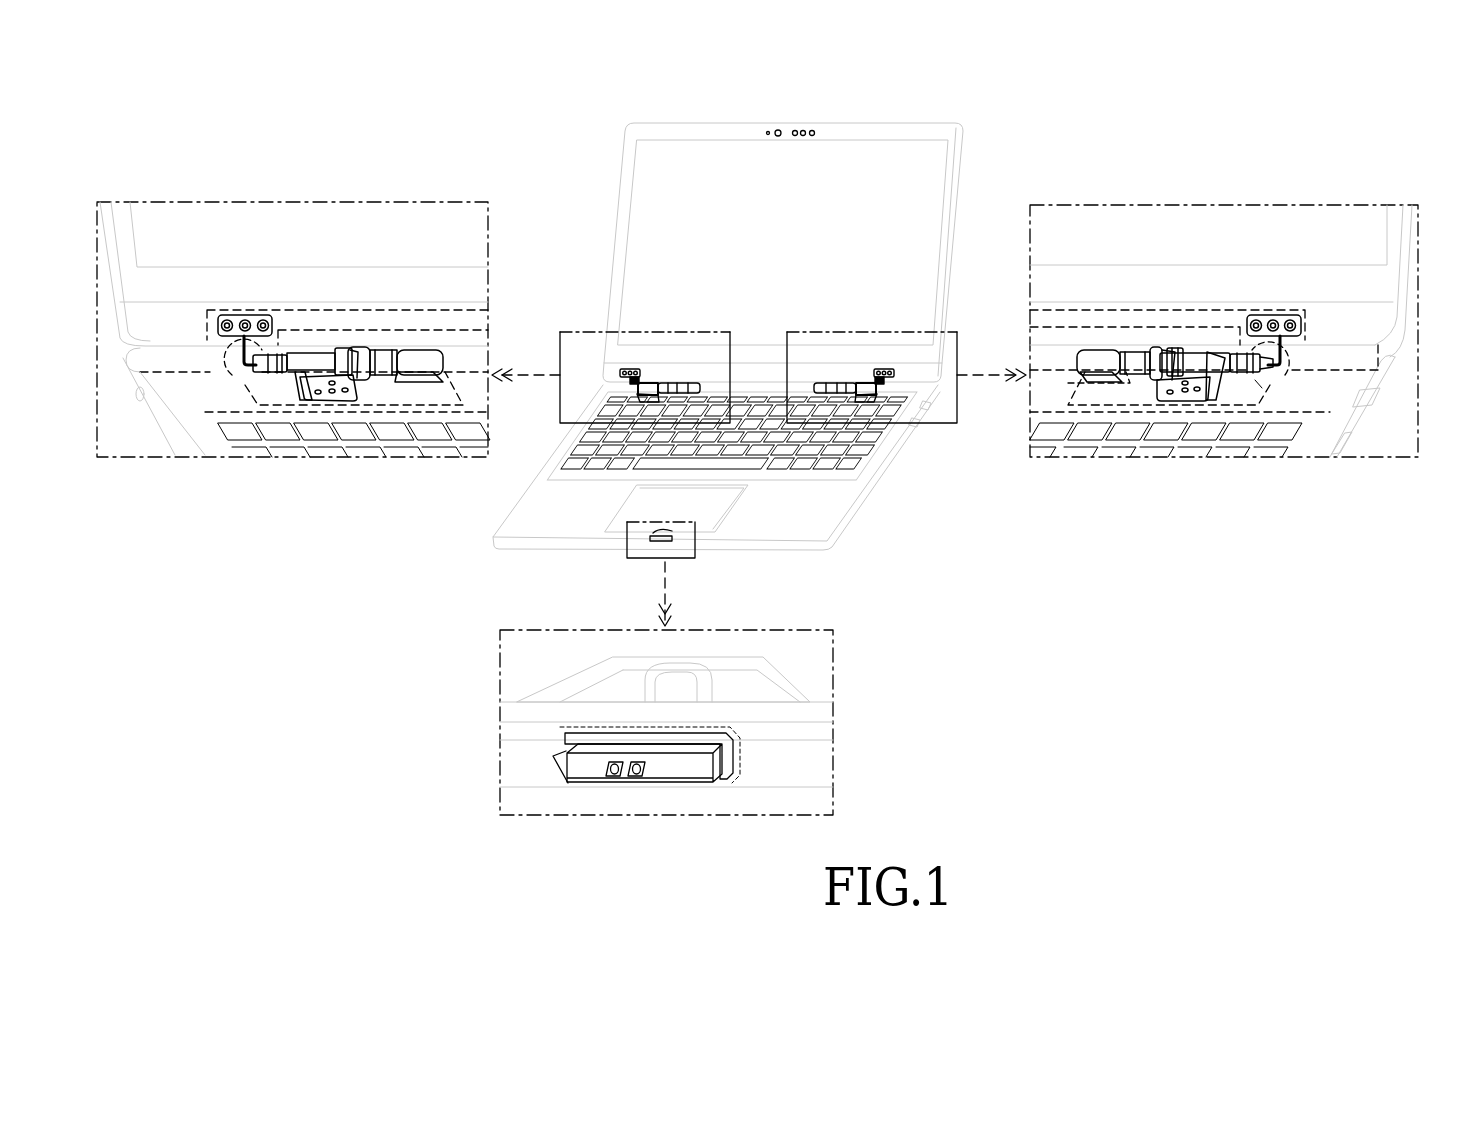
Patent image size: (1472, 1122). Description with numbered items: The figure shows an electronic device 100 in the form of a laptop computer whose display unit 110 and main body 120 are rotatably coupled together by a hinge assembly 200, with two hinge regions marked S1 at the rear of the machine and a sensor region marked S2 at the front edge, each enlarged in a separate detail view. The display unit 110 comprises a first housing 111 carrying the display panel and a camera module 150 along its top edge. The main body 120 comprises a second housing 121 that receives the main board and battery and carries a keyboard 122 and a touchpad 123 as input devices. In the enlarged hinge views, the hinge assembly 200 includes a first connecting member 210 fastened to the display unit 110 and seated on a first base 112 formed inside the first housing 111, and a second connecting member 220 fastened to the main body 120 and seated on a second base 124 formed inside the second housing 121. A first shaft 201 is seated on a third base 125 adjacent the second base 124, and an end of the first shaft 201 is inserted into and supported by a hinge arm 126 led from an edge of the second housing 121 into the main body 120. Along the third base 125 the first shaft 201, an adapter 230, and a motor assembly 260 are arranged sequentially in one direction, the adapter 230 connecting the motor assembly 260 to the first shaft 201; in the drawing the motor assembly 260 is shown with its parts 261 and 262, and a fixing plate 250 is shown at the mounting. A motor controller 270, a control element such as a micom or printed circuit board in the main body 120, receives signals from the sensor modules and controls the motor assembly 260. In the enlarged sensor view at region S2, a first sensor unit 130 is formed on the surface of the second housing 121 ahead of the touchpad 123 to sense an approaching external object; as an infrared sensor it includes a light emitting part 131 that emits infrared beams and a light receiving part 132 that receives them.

The electronic device 100 is at (610, 116).
The display unit 110 is at (627, 215).
The first housing 111 is at (1387, 272).
The first base 112 is at (1238, 318).
The main body 120 is at (527, 508).
The second housing 121 is at (1385, 383).
The keyboard 122 is at (862, 455).
The touchpad 123 is at (710, 507).
The second base 124 is at (1123, 400).
The third base 125 is at (1078, 383).
The hinge arm 126 is at (1260, 385).
The first sensor unit 130 is at (646, 806).
The light emitting part 131 is at (615, 778).
The light receiving part 132 is at (635, 778).
The camera module 150 is at (778, 130).
The hinge assembly 200 is at (681, 364).
The first shaft 201 is at (1267, 367).
The first connecting member 210 is at (1300, 322).
The second connecting member 220 is at (1220, 385).
The adapter 230 is at (1202, 360).
The fixing plate 250 is at (1147, 395).
The motor assembly 260 is at (1121, 241).
The motor 261 is at (1097, 358).
The gear unit 262 is at (1135, 357).
The motor controller 270 is at (1102, 382).
The hinge region S1 is at (655, 330).
The connector region S2 is at (627, 540).